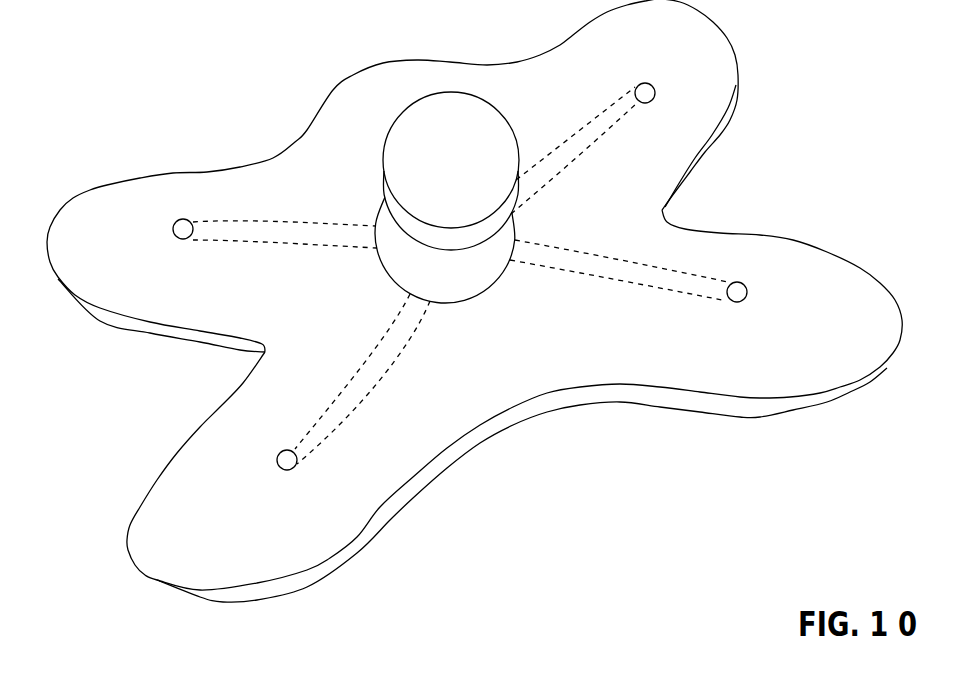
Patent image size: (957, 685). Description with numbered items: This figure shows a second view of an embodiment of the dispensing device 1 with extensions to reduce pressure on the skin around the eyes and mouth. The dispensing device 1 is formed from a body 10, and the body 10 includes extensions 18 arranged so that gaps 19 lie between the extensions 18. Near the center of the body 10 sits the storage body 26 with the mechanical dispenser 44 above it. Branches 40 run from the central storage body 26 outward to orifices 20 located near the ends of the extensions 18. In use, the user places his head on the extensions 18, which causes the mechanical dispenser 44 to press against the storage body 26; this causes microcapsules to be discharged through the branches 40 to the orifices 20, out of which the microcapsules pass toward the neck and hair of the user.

The dispensing device 1 is at (474, 301).
The body 10 is at (547, 361).
The extensions 18 is at (843, 375).
The gaps 19 is at (708, 191).
The orifices 20 is at (654, 89).
The storage body 26 is at (427, 290).
The branches 40 is at (316, 248).
The mechanical dispenser 44 is at (435, 175).